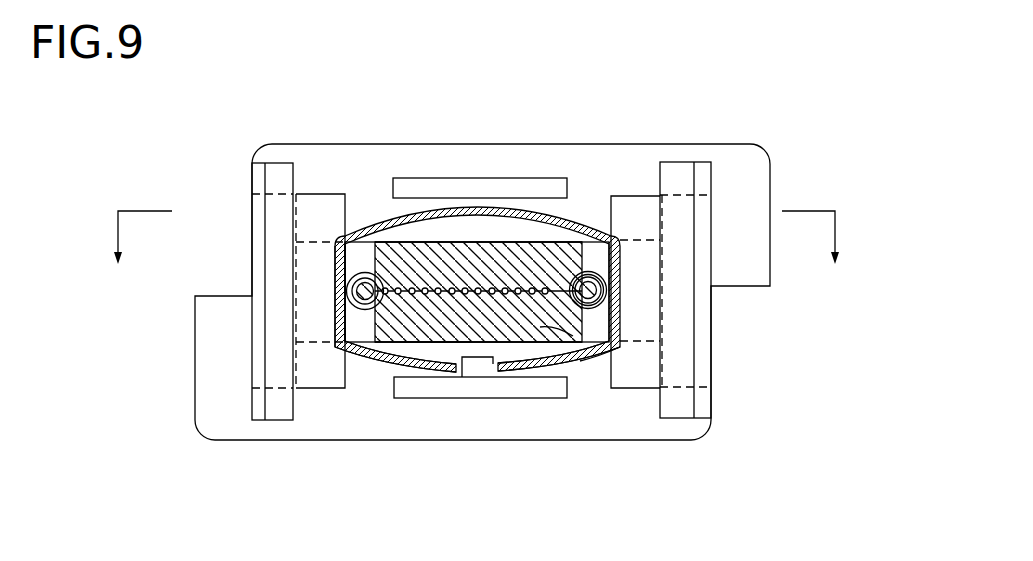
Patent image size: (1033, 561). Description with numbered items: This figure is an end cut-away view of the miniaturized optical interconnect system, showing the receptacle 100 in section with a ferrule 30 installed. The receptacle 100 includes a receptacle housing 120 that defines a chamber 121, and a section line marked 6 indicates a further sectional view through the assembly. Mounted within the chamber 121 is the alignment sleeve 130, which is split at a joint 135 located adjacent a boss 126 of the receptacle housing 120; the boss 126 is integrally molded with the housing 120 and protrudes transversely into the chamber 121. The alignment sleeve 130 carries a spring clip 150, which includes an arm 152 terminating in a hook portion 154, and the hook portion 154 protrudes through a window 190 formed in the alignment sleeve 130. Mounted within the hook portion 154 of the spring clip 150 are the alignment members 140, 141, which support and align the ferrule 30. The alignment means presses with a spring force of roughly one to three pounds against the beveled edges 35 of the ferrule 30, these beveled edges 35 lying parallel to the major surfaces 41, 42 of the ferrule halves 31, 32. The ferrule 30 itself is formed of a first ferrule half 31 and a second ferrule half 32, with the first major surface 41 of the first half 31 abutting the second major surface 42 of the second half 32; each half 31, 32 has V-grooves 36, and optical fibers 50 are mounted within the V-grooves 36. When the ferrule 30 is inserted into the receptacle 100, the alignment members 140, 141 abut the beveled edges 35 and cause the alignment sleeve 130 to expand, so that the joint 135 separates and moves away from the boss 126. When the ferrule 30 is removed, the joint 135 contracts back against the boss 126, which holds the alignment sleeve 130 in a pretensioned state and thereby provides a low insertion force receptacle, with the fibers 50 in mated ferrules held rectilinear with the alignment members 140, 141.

The section line 6- 6 is at (476, 257).
The receptacle 100 is at (258, 144).
The receptacle housing 120 is at (323, 163).
The chamber 121 is at (611, 208).
The boss 126 is at (480, 368).
The alignment sleeve 130 is at (344, 390).
The joint 135 is at (490, 378).
The alignment member 140 is at (343, 293).
The alignment member 141 is at (603, 292).
The spring clip 150 is at (363, 221).
The arm 152 is at (336, 253).
The hook portion 154 is at (368, 350).
The window 190 is at (340, 300).
The ferrule 30 is at (541, 327).
The first ferrule half 31 is at (500, 255).
The second ferrule half 32 is at (600, 352).
The beveled edges 35 is at (575, 274).
The V-grooves 36 is at (447, 243).
The first major surface 41 is at (423, 293).
The second major surface 42 is at (415, 330).
The optical fibers 50 is at (433, 344).